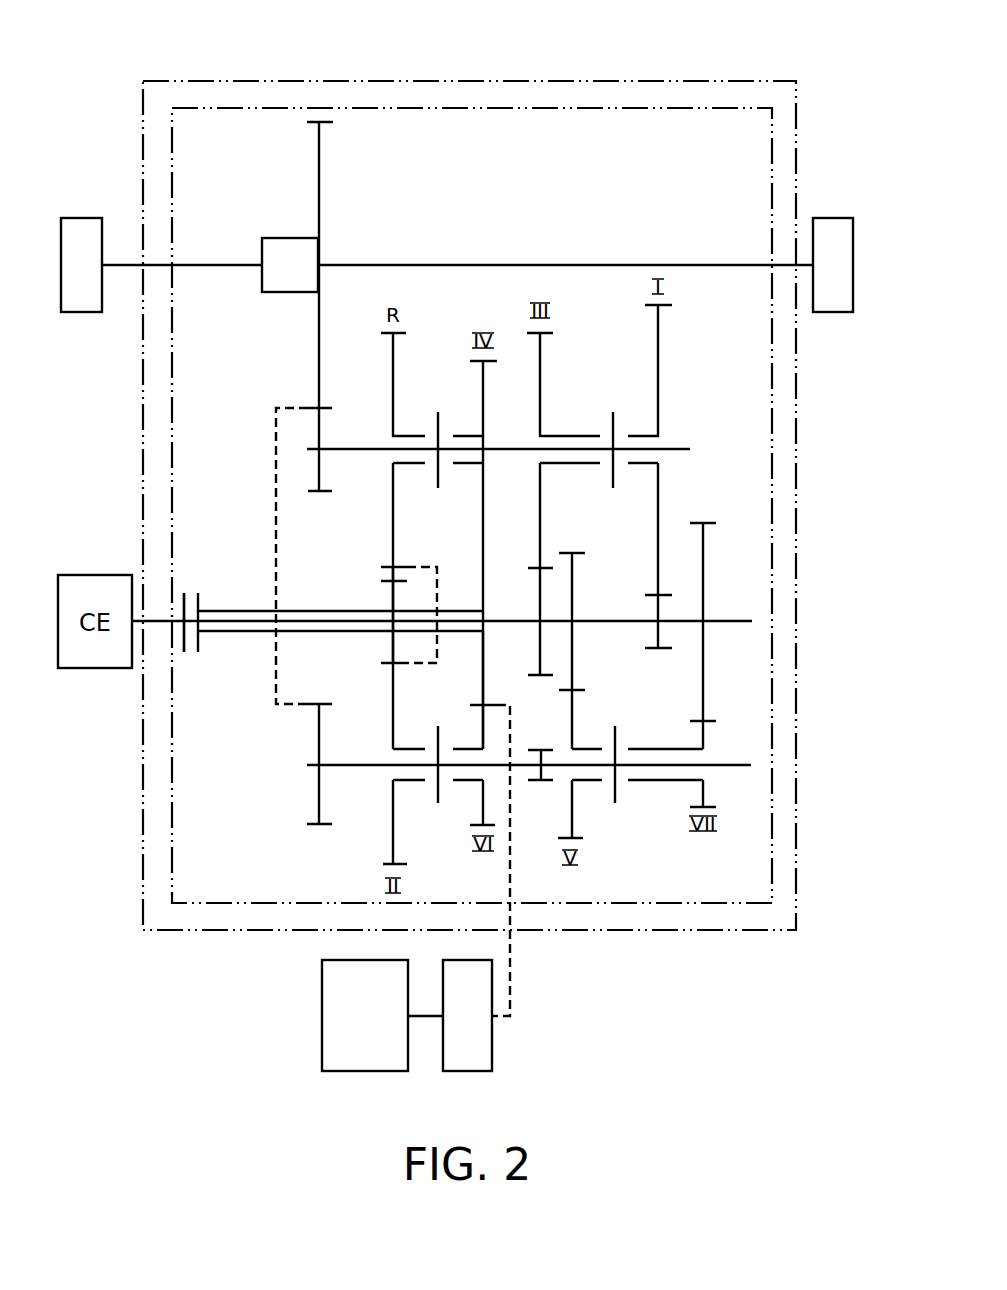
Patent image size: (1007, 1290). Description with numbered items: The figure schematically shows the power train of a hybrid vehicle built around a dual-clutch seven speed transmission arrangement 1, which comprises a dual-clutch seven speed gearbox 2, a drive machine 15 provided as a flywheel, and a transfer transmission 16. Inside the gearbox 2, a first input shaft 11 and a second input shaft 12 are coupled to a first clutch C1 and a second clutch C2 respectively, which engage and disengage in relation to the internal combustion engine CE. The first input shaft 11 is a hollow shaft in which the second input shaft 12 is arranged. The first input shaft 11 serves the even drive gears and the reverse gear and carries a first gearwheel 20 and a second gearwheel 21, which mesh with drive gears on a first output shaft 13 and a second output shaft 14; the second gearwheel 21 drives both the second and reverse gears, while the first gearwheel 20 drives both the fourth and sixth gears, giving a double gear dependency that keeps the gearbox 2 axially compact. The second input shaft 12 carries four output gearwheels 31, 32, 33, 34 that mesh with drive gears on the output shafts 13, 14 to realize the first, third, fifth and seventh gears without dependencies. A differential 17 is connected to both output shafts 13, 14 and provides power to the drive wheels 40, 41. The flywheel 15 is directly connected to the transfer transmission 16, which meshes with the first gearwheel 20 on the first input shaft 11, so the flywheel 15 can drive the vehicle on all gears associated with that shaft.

The dual-clutch seven speed transmission arrangement 1 is at (707, 80).
The dual-clutch seven speed gearbox 2 is at (563, 103).
The first input shaft 11 is at (247, 632).
The second input shaft 12 is at (183, 643).
The first output shaft 13 is at (680, 449).
The second output shaft 14 is at (732, 763).
The drive machine 15 is at (322, 1018).
The transfer transmission 16 is at (492, 1040).
The differential 17 is at (291, 292).
The first gearwheel 20 is at (483, 675).
The second gearwheel 21 is at (393, 650).
The output gearwheel 31 is at (537, 597).
The output gearwheel 32 is at (572, 570).
The output gearwheel 33 is at (660, 608).
The output gearwheel 34 is at (705, 550).
The drive wheel 40 is at (80, 218).
The drive wheel 41 is at (822, 218).
The first clutch C1 is at (200, 600).
The second clutch C2 is at (182, 600).